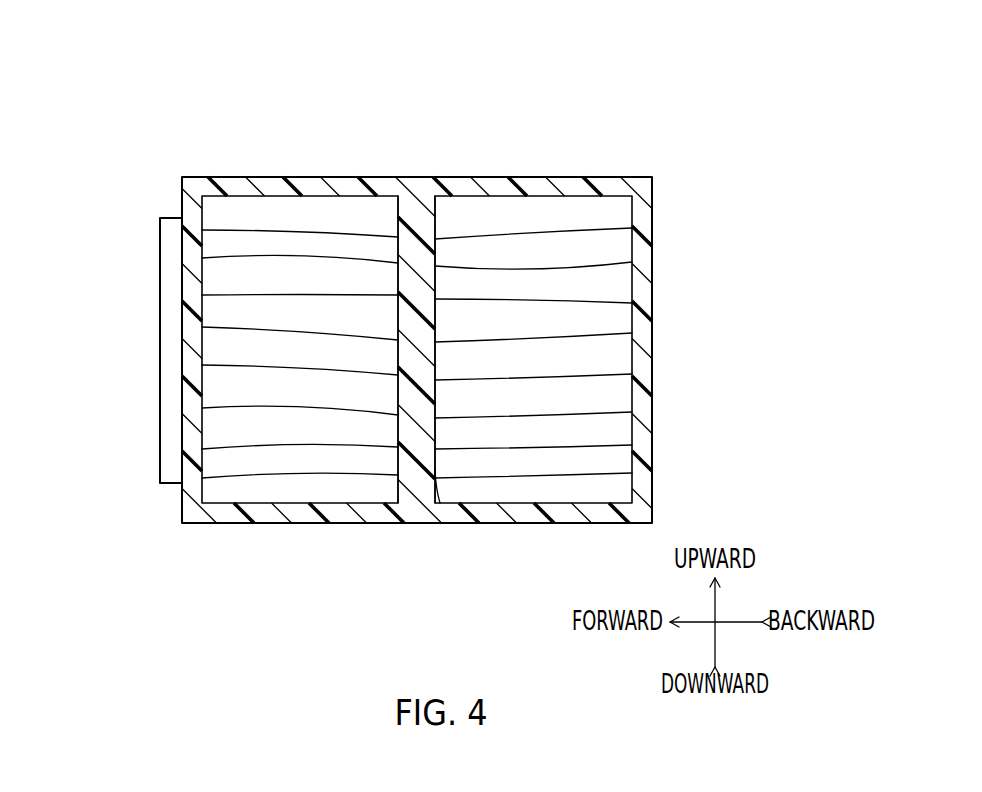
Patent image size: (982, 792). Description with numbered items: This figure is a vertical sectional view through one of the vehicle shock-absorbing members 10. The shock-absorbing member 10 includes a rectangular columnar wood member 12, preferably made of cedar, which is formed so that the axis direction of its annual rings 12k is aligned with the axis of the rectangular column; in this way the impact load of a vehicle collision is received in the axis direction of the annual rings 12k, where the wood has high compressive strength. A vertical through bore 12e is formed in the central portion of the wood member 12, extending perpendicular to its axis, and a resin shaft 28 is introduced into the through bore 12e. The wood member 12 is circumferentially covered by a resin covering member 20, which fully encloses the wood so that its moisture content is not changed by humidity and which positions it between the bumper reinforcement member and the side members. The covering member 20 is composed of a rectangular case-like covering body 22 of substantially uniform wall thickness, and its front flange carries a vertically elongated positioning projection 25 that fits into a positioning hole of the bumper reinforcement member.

The shock-absorbing member 10 is at (397, 150).
The wood member 12 is at (536, 238).
The annual rings 12k is at (313, 253).
The through bore 12e is at (435, 463).
The covering member 20 is at (493, 174).
The covering body 22 is at (270, 187).
The positioning projection 25 is at (170, 292).
The resin shaft 28 is at (415, 257).